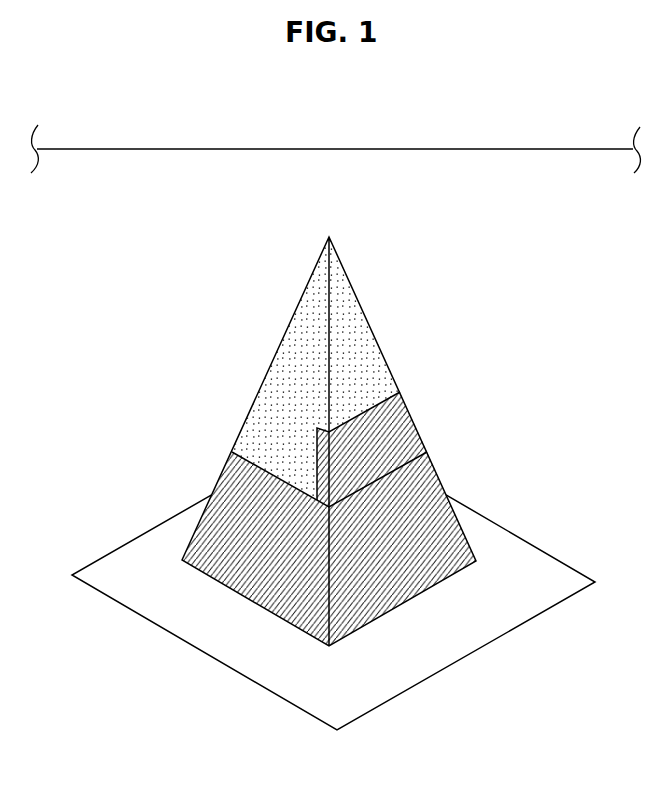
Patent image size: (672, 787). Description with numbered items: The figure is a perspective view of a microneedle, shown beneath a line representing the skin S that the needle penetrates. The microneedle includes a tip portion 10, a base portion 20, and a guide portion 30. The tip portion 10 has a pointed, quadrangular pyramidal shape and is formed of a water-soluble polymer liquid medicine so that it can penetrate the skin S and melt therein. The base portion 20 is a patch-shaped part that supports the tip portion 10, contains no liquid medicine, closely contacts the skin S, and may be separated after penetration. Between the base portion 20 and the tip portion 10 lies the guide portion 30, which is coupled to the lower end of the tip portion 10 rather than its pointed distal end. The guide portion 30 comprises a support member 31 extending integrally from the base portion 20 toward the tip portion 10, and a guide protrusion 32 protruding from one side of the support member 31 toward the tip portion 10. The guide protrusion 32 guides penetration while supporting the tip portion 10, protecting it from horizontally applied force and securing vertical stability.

The skin S is at (405, 133).
The tip portion 10 is at (363, 337).
The base portion 20 is at (447, 643).
The guide portion 30 is at (372, 504).
The support member 31 is at (432, 485).
The guide protrusion 32 is at (488, 482).